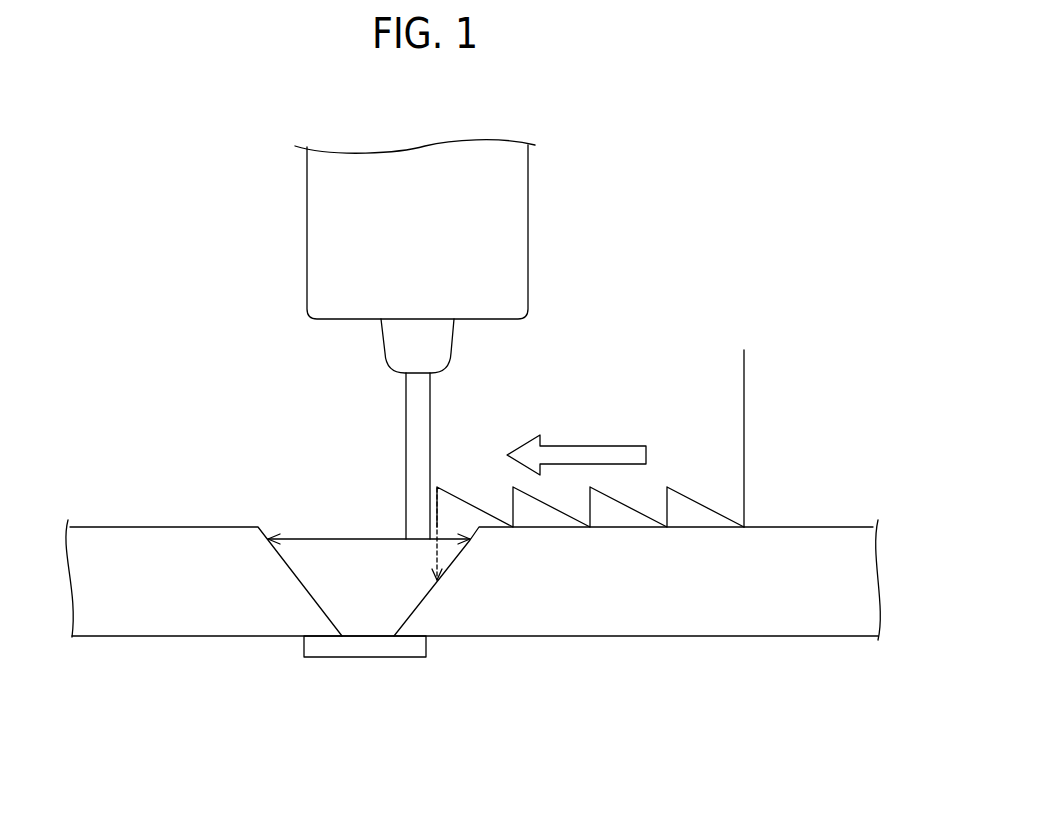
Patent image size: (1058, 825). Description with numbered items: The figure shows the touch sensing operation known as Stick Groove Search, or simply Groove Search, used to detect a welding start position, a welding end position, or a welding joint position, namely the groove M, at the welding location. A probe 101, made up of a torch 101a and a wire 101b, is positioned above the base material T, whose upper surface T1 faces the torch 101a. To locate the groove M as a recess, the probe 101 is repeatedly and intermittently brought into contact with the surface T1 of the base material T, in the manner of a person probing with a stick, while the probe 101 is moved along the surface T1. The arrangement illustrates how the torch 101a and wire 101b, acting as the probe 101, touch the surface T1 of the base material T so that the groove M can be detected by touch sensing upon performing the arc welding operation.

The probe 101 is at (508, 360).
The torch 101a is at (528, 207).
The wire 101b is at (432, 423).
The groove M is at (306, 500).
The base material T is at (165, 622).
The surface of the base material T1 is at (110, 527).